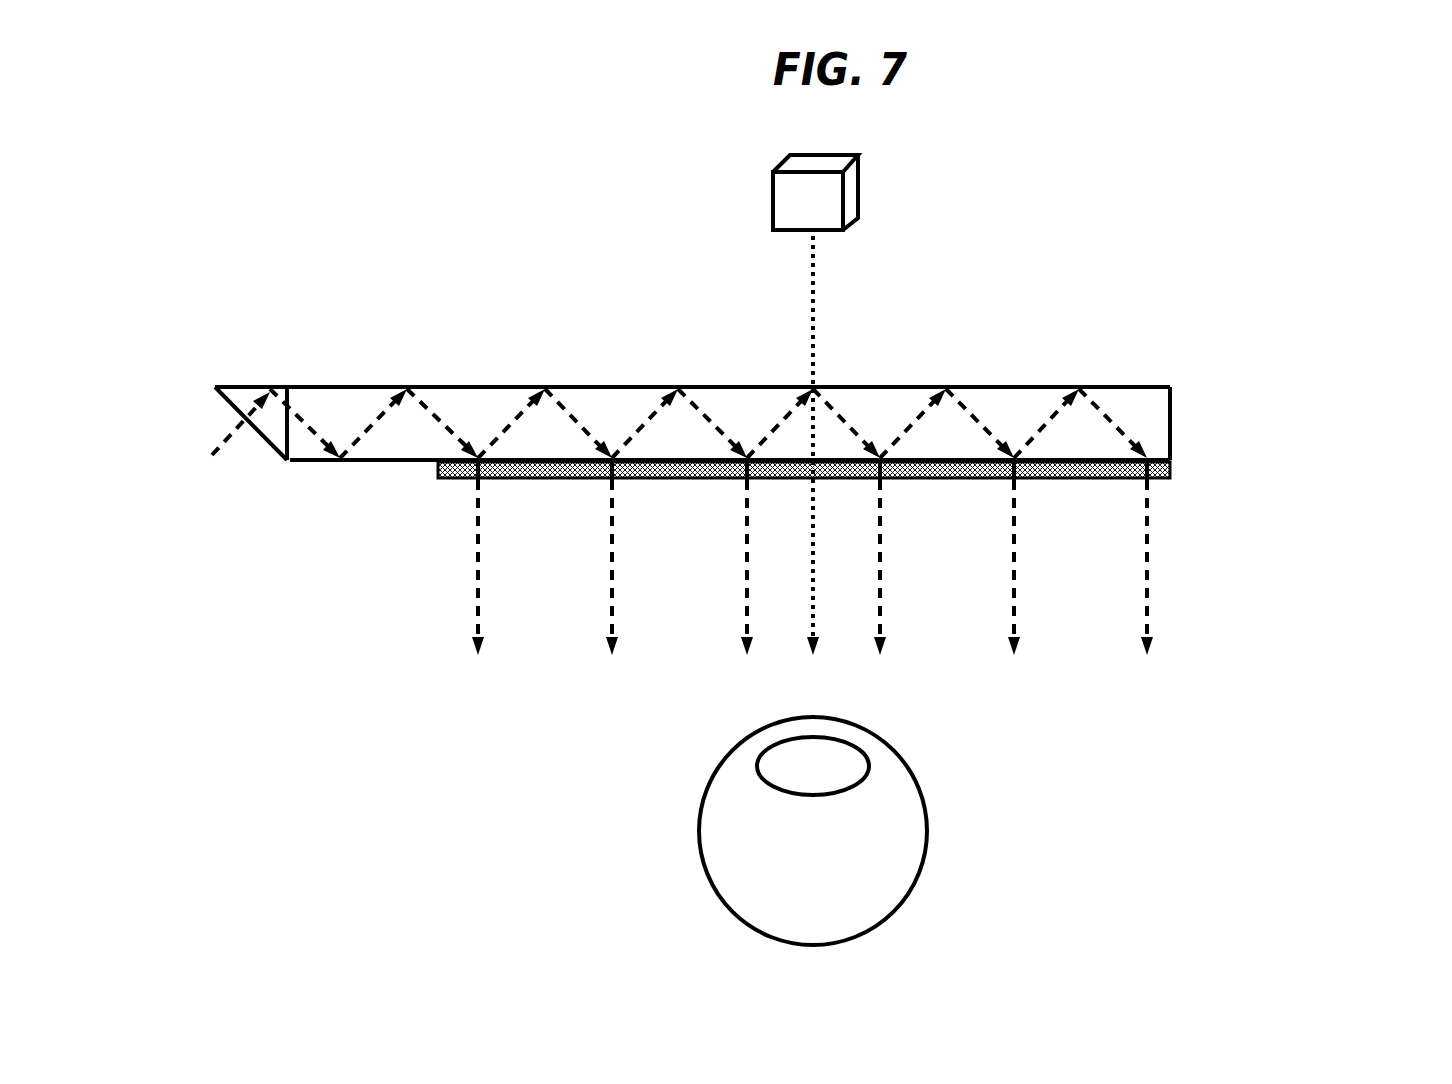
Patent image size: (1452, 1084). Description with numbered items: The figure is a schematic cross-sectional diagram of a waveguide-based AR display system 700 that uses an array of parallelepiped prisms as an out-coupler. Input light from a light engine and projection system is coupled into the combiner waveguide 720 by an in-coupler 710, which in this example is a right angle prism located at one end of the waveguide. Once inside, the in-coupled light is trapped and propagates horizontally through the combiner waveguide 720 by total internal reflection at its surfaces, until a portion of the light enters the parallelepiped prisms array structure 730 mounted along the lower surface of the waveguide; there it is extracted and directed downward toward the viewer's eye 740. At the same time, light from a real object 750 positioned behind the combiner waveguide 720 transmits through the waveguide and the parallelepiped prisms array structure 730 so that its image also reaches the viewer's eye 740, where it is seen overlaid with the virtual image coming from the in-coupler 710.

The waveguide-based AR display system 700 is at (1285, 160).
The in-coupler 710 is at (286, 388).
The combiner waveguide 720 is at (1186, 374).
The parallelepiped prisms array structure 730 is at (1183, 492).
The viewer's eye 740 is at (951, 841).
The real object 750 is at (876, 213).